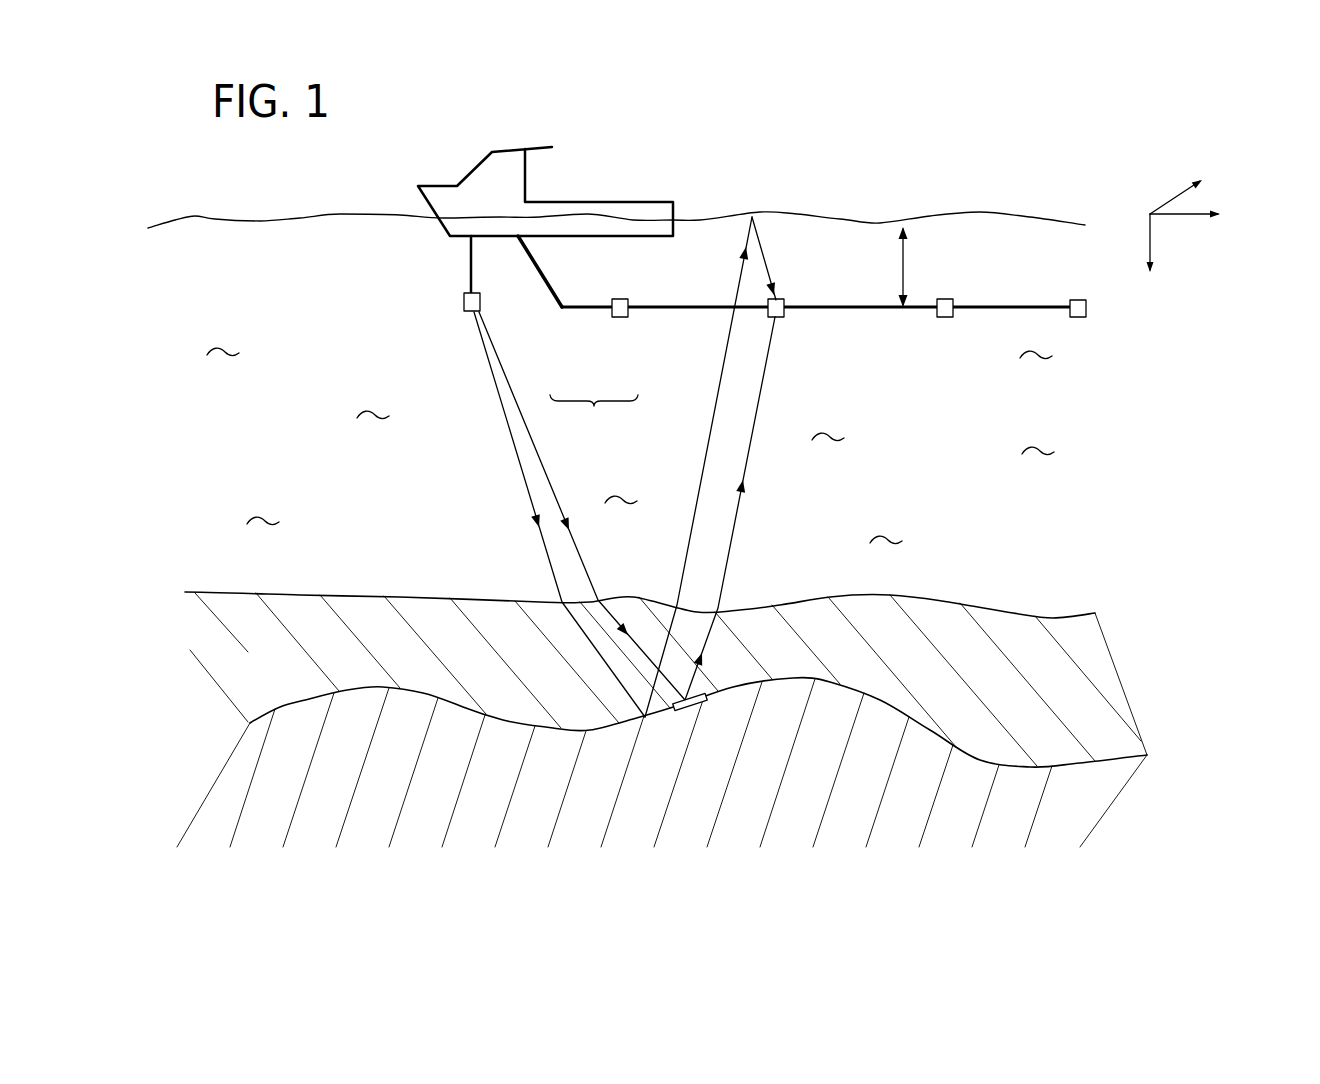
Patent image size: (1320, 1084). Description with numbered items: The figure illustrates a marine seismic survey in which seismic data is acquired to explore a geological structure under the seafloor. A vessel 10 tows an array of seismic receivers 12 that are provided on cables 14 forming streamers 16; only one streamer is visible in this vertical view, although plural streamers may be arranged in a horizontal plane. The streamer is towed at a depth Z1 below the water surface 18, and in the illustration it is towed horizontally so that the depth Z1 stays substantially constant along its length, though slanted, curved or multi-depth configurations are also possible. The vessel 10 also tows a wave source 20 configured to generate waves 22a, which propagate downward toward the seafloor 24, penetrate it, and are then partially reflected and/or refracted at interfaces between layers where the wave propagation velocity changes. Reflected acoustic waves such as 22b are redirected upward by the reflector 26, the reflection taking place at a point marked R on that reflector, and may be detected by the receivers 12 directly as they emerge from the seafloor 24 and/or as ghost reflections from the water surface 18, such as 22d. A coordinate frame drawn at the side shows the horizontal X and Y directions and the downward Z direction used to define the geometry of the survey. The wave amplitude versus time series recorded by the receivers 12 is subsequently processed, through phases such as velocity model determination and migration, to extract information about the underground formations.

The vessel 10 is at (474, 181).
The seismic receivers 12 is at (620, 318).
The cables 14 is at (597, 312).
The streamers 16 is at (594, 414).
The water surface 18 is at (798, 213).
The wave source 20 is at (462, 300).
The waves 22a is at (533, 452).
The reflected acoustic waves 22b is at (733, 545).
The ghost reflections 22d is at (762, 253).
The seafloor 24 is at (942, 600).
The reflector 26 is at (700, 693).
The reflection point R is at (676, 708).
The depth Z1 is at (907, 262).
The X axis X is at (1196, 215).
The Y axis Y is at (1182, 190).
The Z axis Z is at (1149, 255).